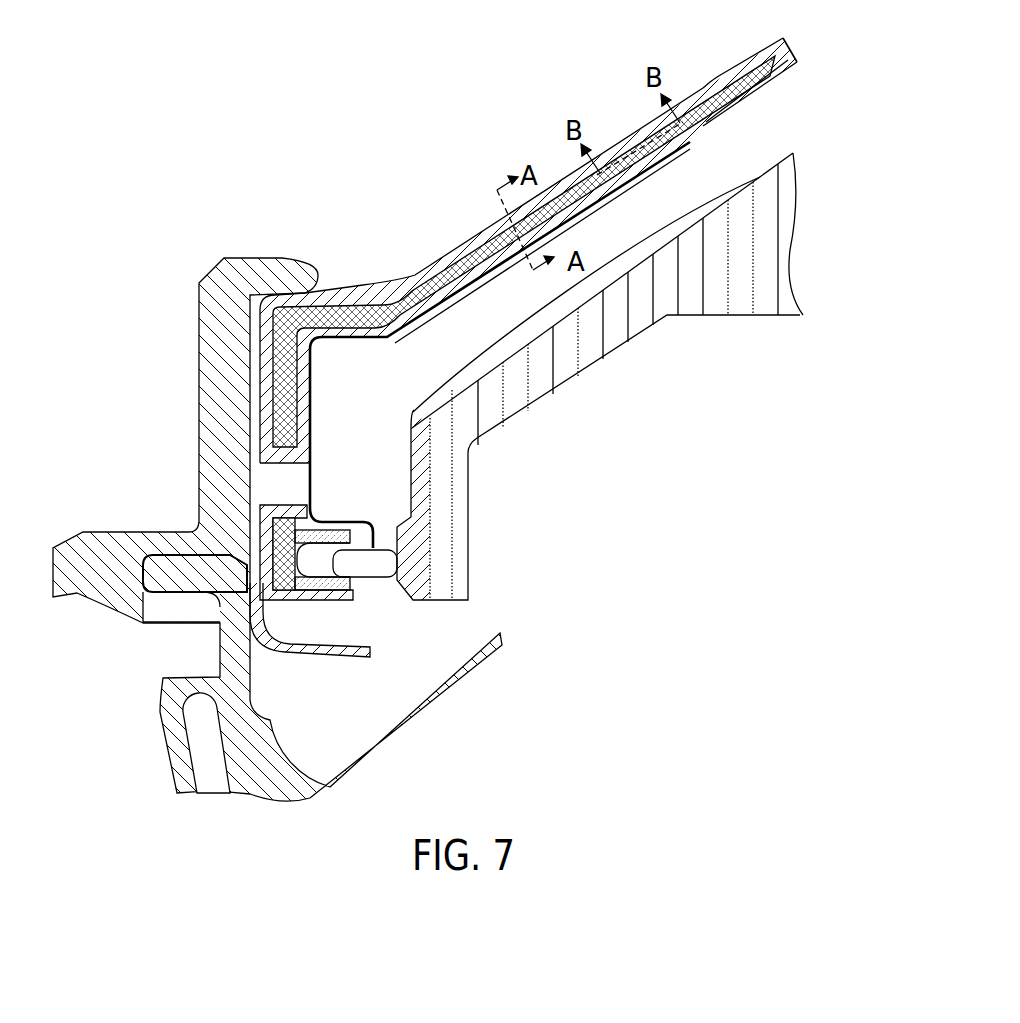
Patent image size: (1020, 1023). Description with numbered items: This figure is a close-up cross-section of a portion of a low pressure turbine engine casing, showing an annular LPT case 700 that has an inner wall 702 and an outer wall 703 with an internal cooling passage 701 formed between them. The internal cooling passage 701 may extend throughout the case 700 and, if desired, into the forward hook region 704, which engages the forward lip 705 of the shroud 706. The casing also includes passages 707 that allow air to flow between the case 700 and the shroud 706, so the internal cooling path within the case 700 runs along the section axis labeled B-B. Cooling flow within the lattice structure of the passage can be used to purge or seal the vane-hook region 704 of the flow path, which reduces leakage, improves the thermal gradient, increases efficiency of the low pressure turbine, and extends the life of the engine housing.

The LPT case 700 is at (472, 248).
The internal cooling passage 701 is at (803, 45).
The inner wall 702 is at (793, 77).
The outer wall 703 is at (760, 60).
The forward hook region 704 is at (342, 597).
The forward lip 705 is at (372, 553).
The shroud 706 is at (430, 397).
The passages 707 is at (302, 490).